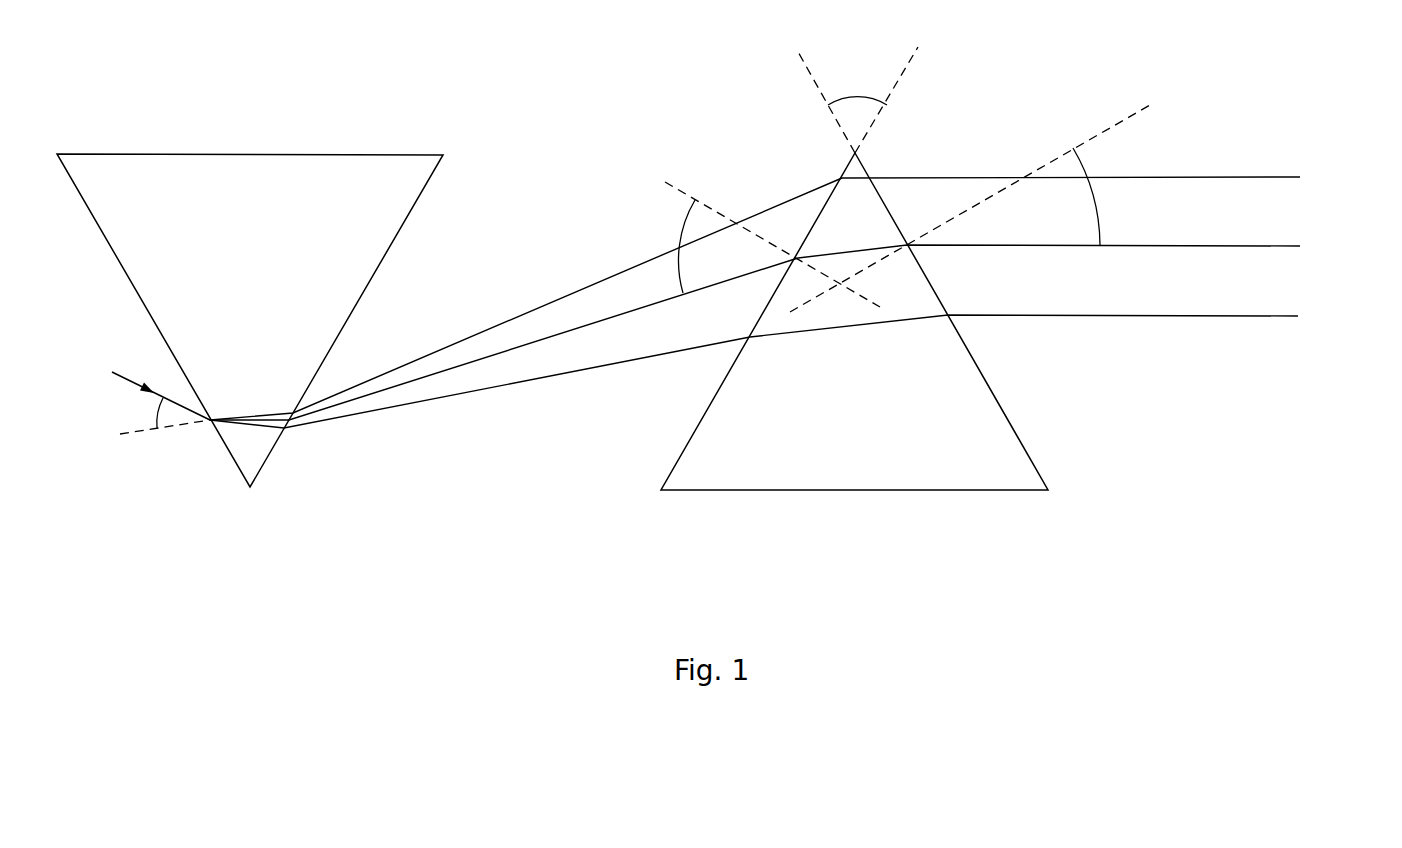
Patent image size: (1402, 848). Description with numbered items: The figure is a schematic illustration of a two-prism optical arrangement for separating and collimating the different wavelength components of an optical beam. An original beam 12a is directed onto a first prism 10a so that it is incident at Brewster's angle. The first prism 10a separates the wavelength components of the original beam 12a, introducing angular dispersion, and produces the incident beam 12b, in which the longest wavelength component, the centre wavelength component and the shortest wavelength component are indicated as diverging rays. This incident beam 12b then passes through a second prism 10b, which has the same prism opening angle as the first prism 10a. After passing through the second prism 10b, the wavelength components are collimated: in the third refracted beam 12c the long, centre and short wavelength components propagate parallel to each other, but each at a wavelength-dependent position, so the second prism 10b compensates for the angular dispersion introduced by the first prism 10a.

The first prism 10a is at (348, 154).
The second prism 10b is at (822, 490).
The original beam 12a is at (155, 401).
The incident beam 12b is at (526, 303).
The third refracted beam 12c is at (1061, 240).